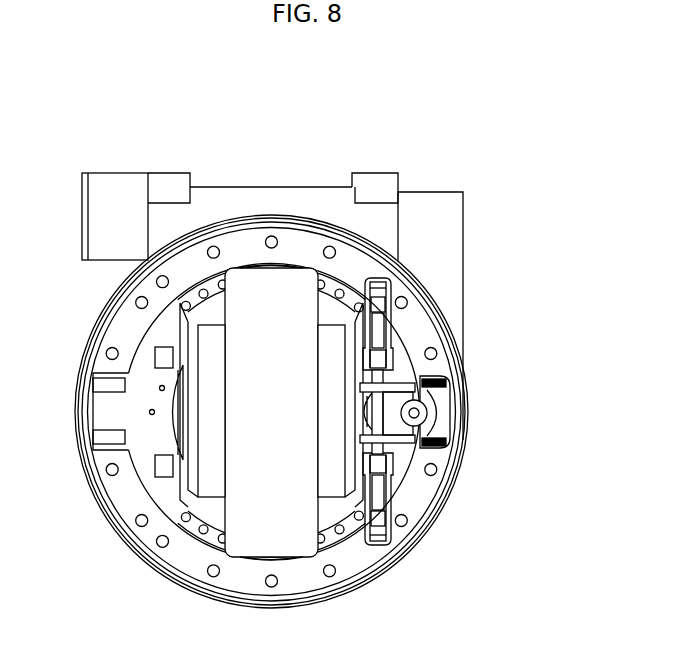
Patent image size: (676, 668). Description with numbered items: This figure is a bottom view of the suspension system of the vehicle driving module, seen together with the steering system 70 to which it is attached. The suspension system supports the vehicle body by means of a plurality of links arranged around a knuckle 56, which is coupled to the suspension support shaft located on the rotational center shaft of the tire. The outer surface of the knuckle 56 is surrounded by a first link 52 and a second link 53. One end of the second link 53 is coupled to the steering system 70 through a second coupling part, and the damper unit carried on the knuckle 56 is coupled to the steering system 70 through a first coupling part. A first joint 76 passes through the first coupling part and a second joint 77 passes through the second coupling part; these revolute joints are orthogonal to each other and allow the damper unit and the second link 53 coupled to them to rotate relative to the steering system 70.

The steering system 70 is at (229, 184).
The second joint 77 is at (392, 293).
The second link 53 is at (388, 340).
The first link 52 is at (389, 349).
The first joint 76 is at (377, 418).
The knuckle 56 is at (441, 439).